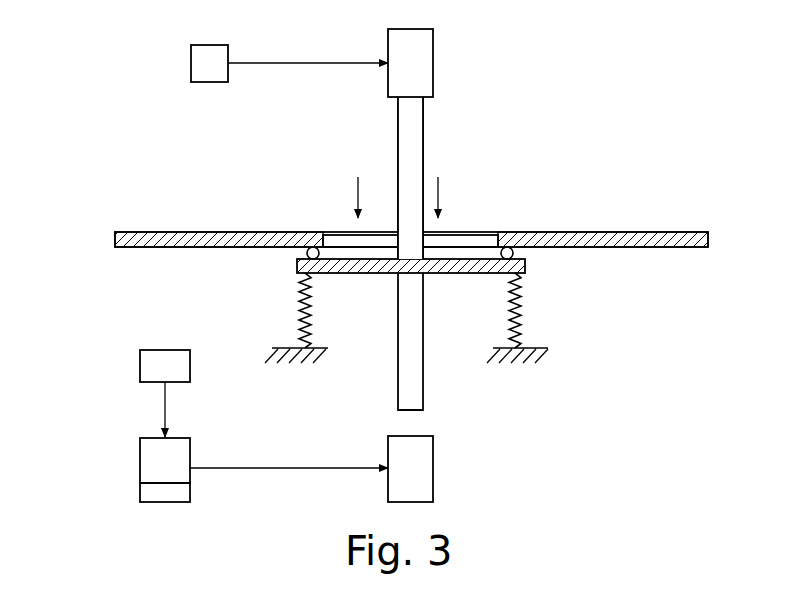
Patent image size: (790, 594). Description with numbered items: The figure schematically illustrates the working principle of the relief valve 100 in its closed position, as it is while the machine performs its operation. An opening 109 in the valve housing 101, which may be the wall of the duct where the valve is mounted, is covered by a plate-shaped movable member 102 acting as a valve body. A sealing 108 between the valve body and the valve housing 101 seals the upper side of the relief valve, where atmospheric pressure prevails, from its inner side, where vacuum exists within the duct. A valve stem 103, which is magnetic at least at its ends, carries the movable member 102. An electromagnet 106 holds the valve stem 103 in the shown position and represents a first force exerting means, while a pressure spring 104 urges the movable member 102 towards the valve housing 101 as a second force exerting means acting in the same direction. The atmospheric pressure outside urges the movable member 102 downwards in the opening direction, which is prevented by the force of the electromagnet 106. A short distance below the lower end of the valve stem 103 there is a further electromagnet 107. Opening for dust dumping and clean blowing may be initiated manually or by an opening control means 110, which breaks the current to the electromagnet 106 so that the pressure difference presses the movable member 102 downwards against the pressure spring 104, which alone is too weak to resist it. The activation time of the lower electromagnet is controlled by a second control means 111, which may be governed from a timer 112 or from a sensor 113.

The relief valve 100 is at (591, 112).
The valve housing 101 is at (610, 238).
The movable member 102 is at (433, 273).
The valve stem 103 is at (412, 387).
The pressure spring 104 is at (517, 322).
The electromagnet 106 is at (410, 62).
The further electromagnet 107 is at (412, 470).
The sealing 108 is at (513, 256).
The opening 109 is at (458, 240).
The opening control means 110 is at (195, 63).
The second control means 111 is at (153, 455).
The timer 112 is at (153, 492).
The sensor 113 is at (150, 365).